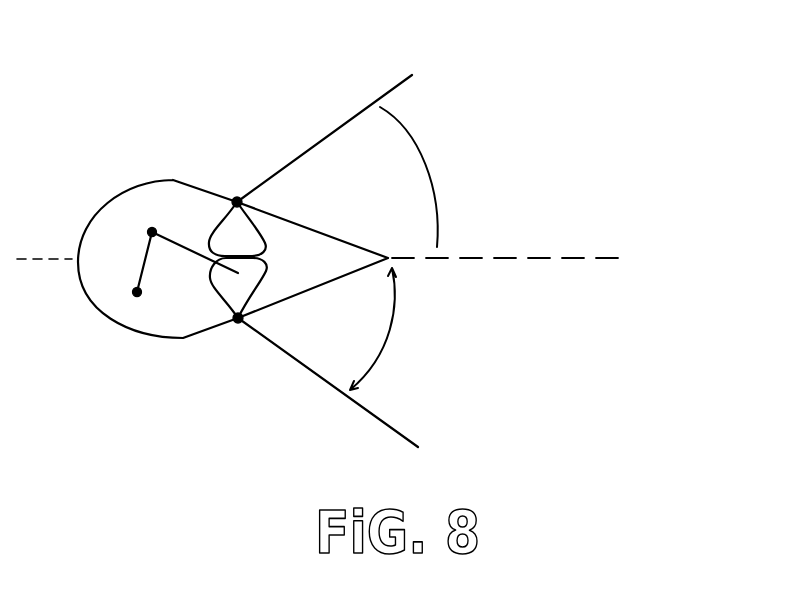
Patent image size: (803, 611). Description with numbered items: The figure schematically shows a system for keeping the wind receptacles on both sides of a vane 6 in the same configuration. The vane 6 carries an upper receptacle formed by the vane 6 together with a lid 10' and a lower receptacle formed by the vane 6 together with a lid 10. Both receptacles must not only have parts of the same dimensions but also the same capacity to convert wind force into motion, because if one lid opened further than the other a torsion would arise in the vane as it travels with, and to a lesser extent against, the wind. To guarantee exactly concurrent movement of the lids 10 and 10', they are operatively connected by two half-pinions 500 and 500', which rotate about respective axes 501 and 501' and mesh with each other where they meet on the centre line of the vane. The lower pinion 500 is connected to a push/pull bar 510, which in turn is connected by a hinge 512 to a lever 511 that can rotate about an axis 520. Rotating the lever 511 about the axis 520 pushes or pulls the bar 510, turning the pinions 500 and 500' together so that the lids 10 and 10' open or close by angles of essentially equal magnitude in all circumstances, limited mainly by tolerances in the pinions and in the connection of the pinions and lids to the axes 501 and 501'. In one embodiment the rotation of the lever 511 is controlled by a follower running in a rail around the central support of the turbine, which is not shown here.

The vane 6 is at (143, 180).
The lid 10 is at (338, 382).
The lid 10' is at (335, 113).
The half-pinion 500 is at (276, 283).
The half-pinion 500' is at (280, 219).
The axis 501 is at (225, 364).
The axis 501' is at (265, 161).
The push/pull bar 510 is at (183, 236).
The lever 511 is at (140, 271).
The hinge 512 is at (144, 235).
The axis 520 is at (127, 312).